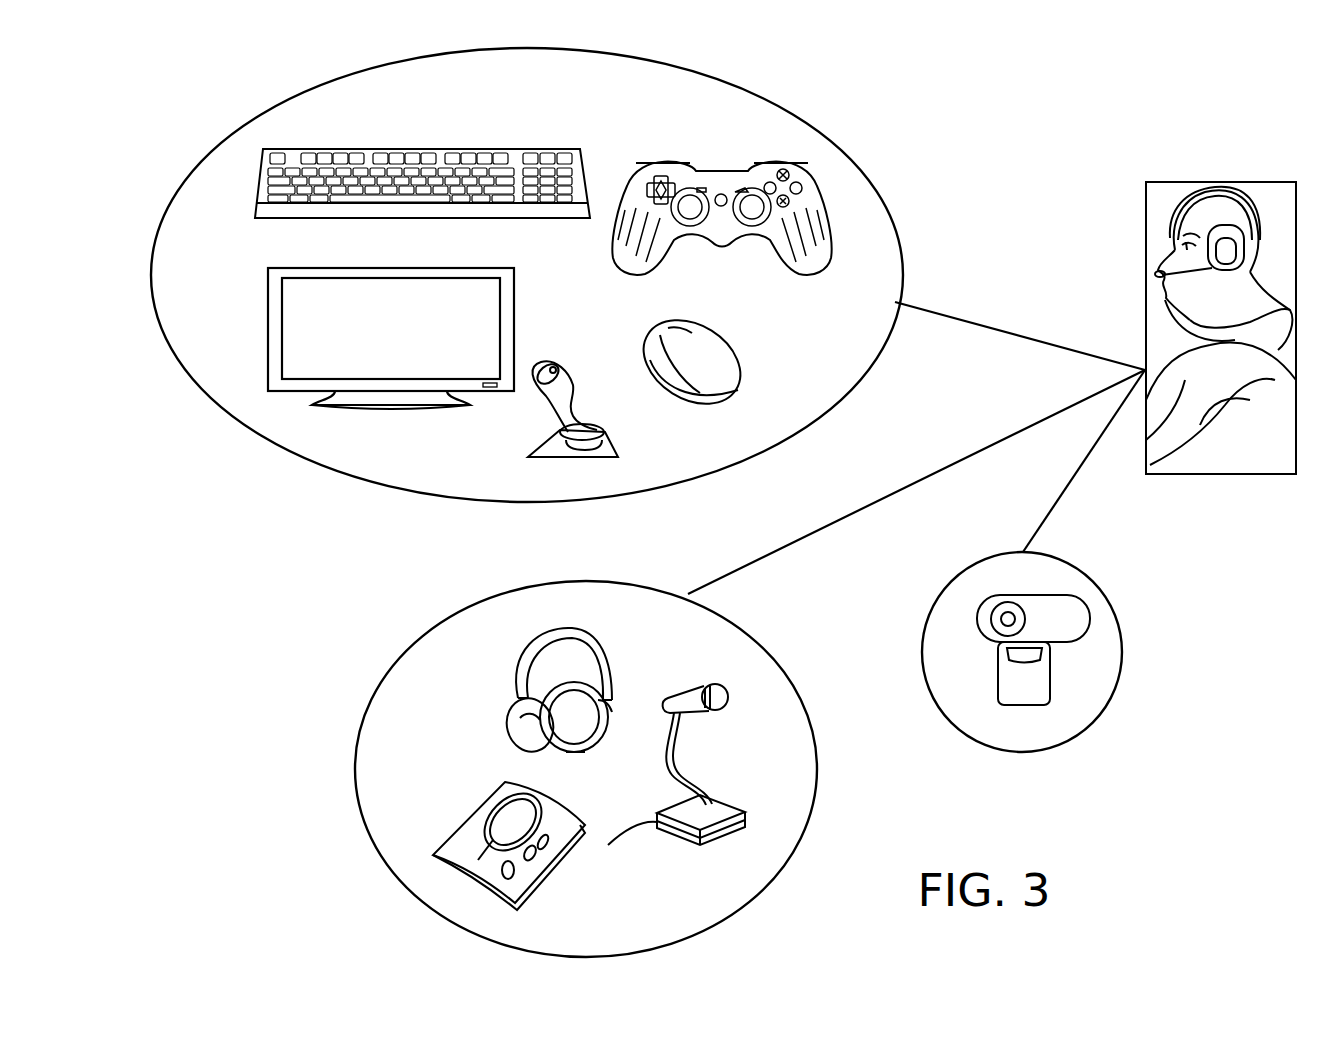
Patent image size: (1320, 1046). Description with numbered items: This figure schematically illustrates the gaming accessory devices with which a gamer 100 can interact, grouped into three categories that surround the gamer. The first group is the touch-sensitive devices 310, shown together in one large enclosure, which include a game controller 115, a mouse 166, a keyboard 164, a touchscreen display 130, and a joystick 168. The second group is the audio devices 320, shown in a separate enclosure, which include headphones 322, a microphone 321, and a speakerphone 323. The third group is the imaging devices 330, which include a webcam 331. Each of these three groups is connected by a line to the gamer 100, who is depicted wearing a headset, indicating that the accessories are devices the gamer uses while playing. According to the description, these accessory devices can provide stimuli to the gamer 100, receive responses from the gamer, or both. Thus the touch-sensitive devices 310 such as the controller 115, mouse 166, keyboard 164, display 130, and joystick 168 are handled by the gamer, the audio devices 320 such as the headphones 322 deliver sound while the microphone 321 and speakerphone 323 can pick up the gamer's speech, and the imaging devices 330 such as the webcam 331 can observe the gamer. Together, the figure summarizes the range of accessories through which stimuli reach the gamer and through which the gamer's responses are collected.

The touch-sensitive devices 310 is at (211, 122).
The keyboard 164 is at (470, 118).
The game controller 115 is at (735, 143).
The touchscreen display 130 is at (574, 293).
The joystick 168 is at (619, 361).
The mouse 166 is at (807, 341).
The gamer 100 is at (1222, 181).
The audio devices 320 is at (331, 752).
The headphones 322 is at (472, 688).
The microphone 321 is at (709, 663).
The speakerphone 323 is at (438, 793).
The imaging devices 330 is at (1137, 711).
The webcam 331 is at (978, 676).